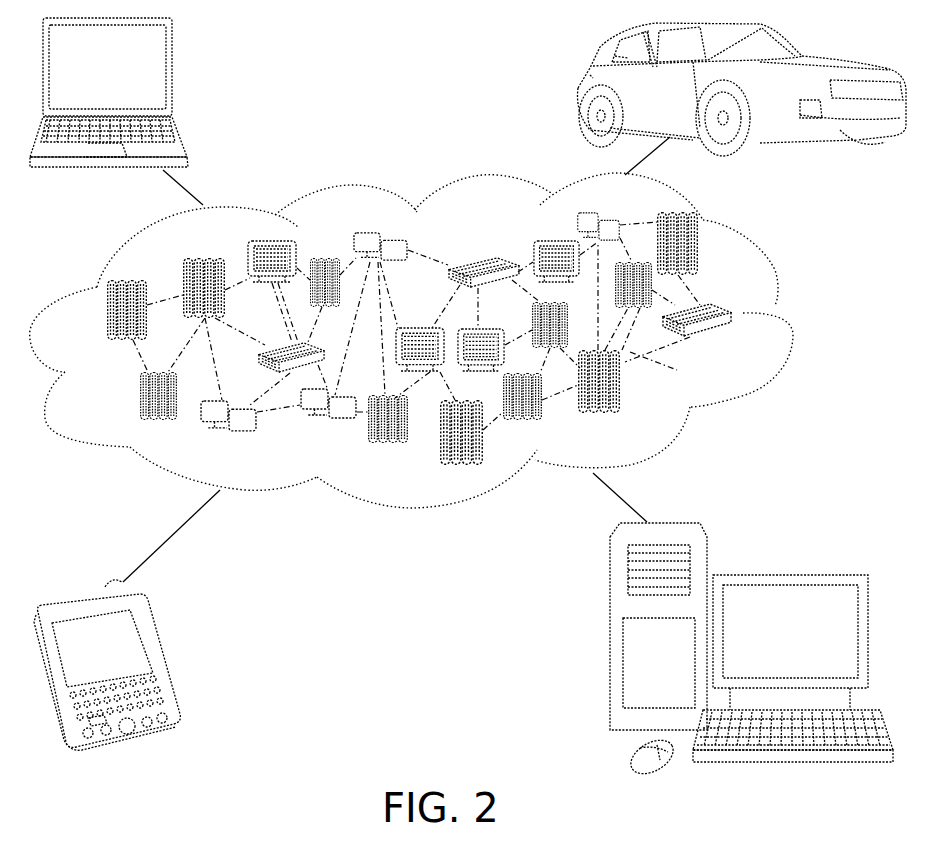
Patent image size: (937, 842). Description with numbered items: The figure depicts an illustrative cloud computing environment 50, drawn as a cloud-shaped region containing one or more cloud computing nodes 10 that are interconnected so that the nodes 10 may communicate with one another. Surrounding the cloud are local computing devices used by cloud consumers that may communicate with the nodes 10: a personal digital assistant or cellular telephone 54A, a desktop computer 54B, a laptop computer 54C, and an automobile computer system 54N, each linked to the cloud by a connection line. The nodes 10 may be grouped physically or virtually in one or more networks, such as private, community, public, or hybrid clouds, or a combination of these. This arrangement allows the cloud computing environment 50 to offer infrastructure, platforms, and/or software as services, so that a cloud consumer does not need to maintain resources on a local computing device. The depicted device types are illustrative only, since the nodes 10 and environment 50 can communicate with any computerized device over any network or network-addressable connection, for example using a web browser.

The cloud computing nodes 10 is at (733, 345).
The cloud computing environment 50 is at (790, 320).
The personal digital assistant or cellular telephone 54A is at (158, 665).
The desktop computer 54B is at (787, 575).
The laptop computer 54C is at (171, 77).
The automobile computer system 54N is at (585, 85).